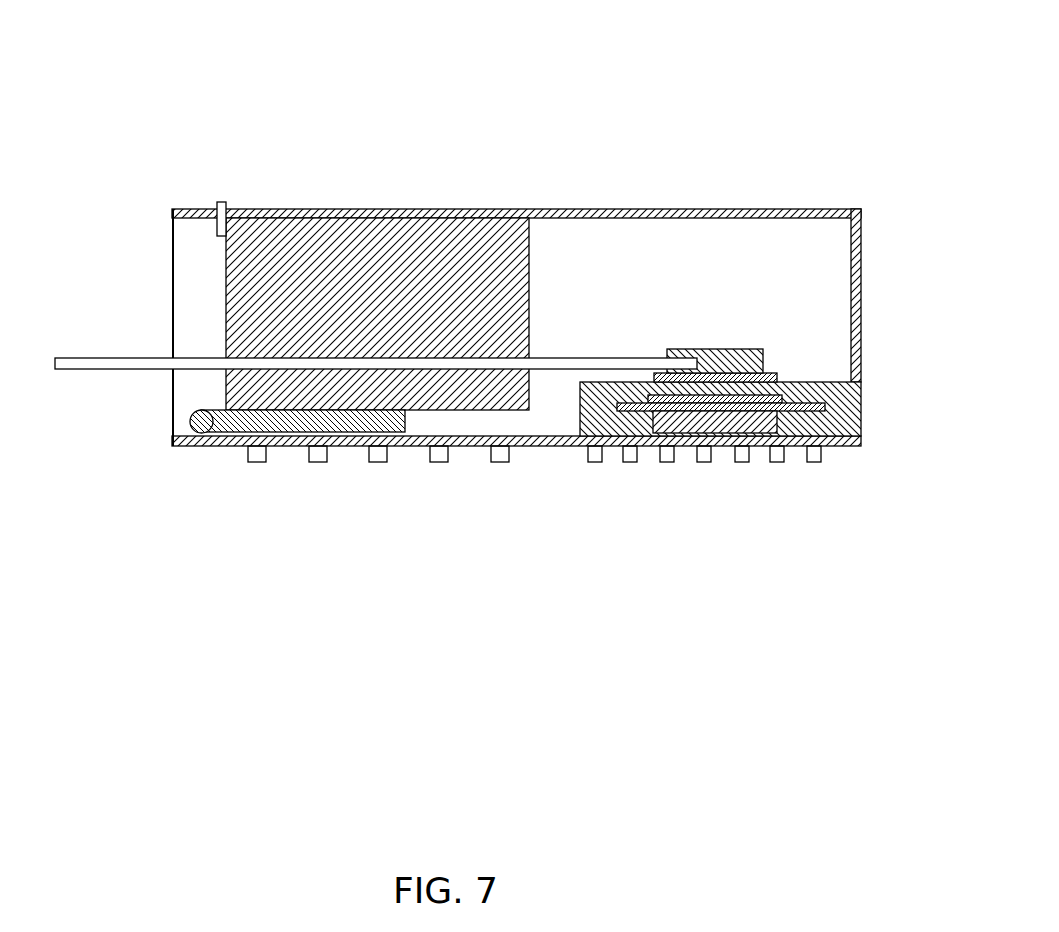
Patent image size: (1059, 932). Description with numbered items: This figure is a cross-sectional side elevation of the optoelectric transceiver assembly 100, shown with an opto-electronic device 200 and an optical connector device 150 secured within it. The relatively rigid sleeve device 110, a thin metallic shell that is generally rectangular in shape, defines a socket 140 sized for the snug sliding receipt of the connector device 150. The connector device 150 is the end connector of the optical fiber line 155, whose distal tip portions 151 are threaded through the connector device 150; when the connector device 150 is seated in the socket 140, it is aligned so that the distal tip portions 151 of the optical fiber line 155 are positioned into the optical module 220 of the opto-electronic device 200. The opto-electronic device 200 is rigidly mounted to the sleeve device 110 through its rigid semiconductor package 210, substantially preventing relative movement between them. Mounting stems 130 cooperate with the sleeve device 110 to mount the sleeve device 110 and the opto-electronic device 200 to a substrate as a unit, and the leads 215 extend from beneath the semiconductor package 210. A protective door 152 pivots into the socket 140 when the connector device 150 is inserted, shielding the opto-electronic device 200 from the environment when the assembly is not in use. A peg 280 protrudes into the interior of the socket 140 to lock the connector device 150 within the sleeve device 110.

The optoelectric transceiver assembly 100 is at (485, 296).
The sleeve device 110 is at (720, 209).
The mounting stems 130 is at (254, 462).
The socket 140 is at (573, 248).
The optical transmission connector device 150 is at (529, 307).
The distal tip portions 151 is at (683, 349).
The protective door 152 is at (405, 425).
The optical fiber line 155 is at (126, 355).
The opto-electronic device 200 is at (744, 417).
The semiconductor package 210 is at (578, 410).
The electrical leads 215 is at (665, 462).
The optical module 220 is at (753, 326).
The peg 280 is at (223, 202).